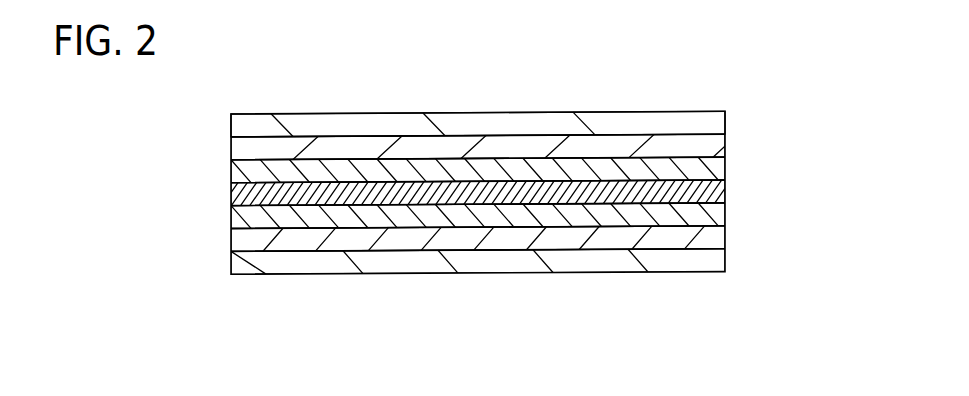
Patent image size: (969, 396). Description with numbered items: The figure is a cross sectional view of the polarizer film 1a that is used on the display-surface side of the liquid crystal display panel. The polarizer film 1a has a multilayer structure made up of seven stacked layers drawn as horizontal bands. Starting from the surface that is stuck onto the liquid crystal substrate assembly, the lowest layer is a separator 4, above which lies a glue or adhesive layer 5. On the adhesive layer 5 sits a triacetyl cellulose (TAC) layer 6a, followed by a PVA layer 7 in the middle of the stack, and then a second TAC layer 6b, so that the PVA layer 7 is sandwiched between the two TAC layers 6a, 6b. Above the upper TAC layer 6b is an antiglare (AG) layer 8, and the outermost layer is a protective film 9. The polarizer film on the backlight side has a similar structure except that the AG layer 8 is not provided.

The polarizer film 1a is at (711, 53).
The protective film 9 is at (721, 121).
The antiglare (AG) layer 8 is at (721, 147).
The TAC layer 6b is at (721, 166).
The PVA layer 7 is at (721, 188).
The triacetyl cellulose (TAC) layer 6a is at (719, 213).
The glue or adhesive layer 5 is at (719, 239).
The separator 4 is at (719, 259).